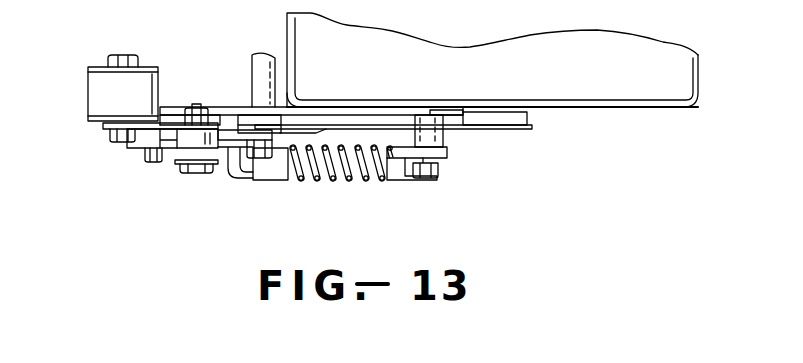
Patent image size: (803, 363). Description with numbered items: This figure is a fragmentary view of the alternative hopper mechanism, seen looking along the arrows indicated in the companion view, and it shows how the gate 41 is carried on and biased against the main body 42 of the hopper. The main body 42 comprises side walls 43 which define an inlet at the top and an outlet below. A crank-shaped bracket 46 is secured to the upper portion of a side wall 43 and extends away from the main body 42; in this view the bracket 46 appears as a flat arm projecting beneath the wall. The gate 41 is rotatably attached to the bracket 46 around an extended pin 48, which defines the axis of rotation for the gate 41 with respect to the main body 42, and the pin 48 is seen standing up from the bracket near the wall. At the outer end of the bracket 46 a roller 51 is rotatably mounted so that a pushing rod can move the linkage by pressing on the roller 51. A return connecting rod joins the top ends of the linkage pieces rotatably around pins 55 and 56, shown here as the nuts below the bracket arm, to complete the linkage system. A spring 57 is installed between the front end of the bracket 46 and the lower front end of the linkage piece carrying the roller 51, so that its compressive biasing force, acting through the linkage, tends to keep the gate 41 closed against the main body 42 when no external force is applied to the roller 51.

The gate 41 is at (518, 130).
The main body 42 is at (482, 55).
The side walls 43 is at (593, 110).
The crank-shaped brackets 46 is at (456, 115).
The extended pin 48 is at (255, 75).
The roller 51 is at (98, 98).
The pin 55 is at (188, 175).
The pin 56 is at (153, 163).
The spring 57 is at (332, 180).